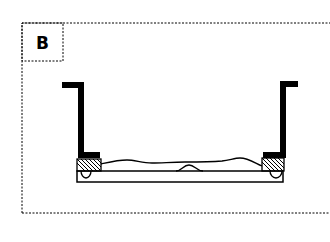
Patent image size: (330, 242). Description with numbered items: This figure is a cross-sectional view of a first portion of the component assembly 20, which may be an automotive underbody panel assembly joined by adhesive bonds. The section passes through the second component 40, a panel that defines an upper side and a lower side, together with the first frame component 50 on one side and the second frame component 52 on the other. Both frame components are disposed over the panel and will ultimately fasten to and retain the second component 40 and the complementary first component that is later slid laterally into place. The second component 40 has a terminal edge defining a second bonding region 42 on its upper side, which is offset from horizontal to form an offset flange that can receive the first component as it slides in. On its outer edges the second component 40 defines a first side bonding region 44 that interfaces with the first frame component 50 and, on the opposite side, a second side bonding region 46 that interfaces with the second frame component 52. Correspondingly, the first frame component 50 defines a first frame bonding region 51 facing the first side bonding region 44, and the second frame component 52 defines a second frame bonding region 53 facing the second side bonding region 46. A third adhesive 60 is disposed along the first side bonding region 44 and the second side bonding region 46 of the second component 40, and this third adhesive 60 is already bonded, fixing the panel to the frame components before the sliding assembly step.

The component assembly 20 is at (152, 57).
The second component 40 is at (140, 179).
The second bonding region 42 is at (197, 168).
The first side bonding region 44 is at (84, 176).
The second side bonding region 46 is at (283, 180).
The first frame component 50 is at (85, 98).
The first frame bonding region 51 is at (78, 162).
The second frame component 52 is at (279, 93).
The second frame bonding region 53 is at (285, 160).
The third adhesive 60 is at (208, 162).